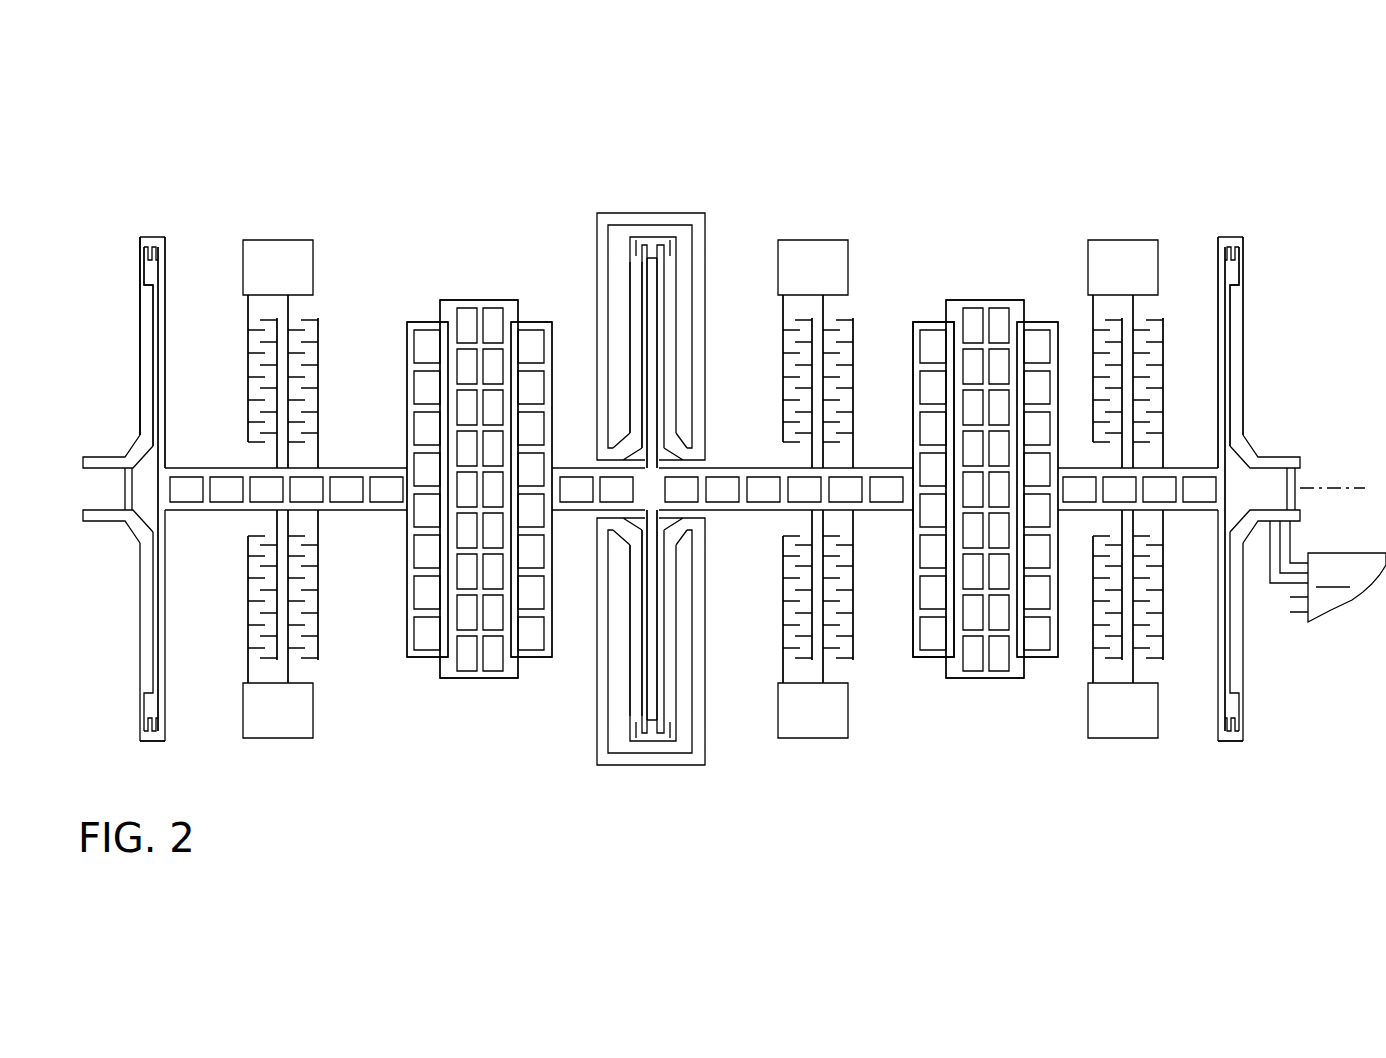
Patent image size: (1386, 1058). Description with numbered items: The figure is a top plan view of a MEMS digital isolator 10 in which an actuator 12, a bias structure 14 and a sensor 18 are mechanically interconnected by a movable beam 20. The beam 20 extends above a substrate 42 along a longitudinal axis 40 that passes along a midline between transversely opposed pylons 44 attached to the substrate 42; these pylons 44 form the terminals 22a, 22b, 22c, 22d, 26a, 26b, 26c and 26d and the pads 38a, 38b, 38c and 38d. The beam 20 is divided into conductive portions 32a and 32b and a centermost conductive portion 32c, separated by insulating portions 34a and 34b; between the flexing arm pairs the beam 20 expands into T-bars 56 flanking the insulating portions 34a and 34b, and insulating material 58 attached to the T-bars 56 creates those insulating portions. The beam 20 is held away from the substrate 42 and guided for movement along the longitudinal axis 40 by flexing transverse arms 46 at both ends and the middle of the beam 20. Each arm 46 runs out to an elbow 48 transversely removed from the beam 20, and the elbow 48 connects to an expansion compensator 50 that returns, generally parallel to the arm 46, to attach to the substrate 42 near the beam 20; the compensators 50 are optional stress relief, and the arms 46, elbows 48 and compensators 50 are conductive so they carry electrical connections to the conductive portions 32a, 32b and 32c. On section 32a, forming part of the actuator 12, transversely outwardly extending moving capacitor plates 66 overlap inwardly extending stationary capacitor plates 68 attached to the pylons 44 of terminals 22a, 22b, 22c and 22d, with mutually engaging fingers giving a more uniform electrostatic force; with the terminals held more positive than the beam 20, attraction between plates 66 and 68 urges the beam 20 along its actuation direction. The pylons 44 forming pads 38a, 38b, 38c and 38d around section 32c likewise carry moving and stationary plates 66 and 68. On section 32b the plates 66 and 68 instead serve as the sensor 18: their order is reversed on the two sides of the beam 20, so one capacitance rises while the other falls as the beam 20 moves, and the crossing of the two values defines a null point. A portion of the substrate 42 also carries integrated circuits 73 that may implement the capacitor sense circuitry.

The MEMS digital isolator 10 is at (108, 244).
The actuator 12 is at (152, 761).
The bias structure 14 is at (892, 686).
The sensor 18 is at (1200, 751).
The movable beam 20 is at (352, 468).
The terminal 22a is at (258, 282).
The terminal 22b is at (258, 725).
The terminal 22c is at (83, 457).
The terminal 22d is at (83, 521).
The terminal 26a is at (1103, 282).
The terminal 26b is at (1103, 725).
The terminal 26c is at (1268, 457).
The terminal 26d is at (1302, 516).
The conductive portion 32a is at (345, 510).
The conductive portion 32b is at (1178, 510).
The centermost conductive portion 32c is at (860, 510).
The insulating portion 34a is at (470, 678).
The insulating portion 34b is at (985, 516).
The pad 38a is at (793, 282).
The pad 38b is at (793, 725).
The pad 38c is at (648, 213).
The pad 38d is at (678, 765).
The longitudinal axis 40 is at (1318, 486).
The substrate 42 is at (1277, 336).
The pylon 44 is at (288, 240).
The flexing transverse arm 46 is at (166, 392).
The elbow 48 is at (150, 228).
The expansion compensator 50 is at (140, 372).
The T-bar 56 is at (420, 322).
The insulating material 58 is at (985, 300).
The moving capacitor plate 66 is at (318, 462).
The stationary capacitor plate 68 is at (288, 308).
The integrated circuits 73 is at (128, 478).